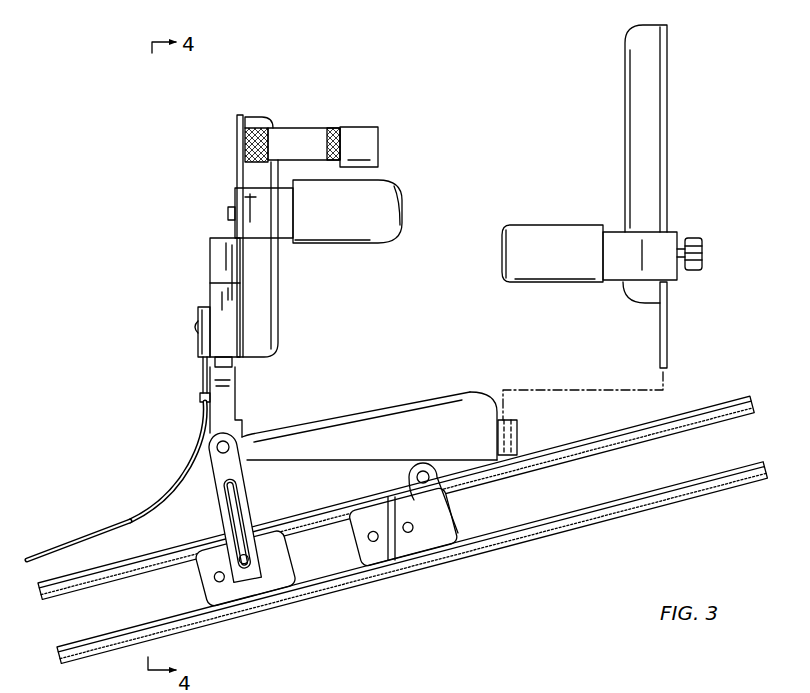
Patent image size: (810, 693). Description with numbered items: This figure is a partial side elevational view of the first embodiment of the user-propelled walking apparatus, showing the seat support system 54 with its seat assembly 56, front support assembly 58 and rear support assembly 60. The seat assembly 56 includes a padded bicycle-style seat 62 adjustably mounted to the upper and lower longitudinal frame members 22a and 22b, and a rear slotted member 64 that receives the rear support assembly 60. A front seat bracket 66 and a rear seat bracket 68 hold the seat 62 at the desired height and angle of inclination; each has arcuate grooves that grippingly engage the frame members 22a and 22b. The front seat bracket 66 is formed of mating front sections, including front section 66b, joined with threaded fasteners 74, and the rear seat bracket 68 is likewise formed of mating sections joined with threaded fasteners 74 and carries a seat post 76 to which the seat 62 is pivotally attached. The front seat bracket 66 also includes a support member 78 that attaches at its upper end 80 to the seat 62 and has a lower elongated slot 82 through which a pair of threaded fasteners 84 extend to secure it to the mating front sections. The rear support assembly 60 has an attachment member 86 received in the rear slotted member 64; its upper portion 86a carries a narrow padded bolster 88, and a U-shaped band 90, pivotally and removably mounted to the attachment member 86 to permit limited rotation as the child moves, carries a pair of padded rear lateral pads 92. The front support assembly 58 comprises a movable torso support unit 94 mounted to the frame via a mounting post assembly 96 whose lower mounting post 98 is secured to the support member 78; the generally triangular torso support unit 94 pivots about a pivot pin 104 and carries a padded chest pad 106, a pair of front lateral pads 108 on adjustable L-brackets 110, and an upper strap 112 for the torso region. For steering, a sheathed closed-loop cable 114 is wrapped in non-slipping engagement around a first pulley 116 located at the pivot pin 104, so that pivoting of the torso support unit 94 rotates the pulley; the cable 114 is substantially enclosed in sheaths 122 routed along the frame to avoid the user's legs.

The upper longitudinal frame member 22a is at (715, 405).
The lower longitudinal frame member 22b is at (715, 490).
The seat support system 54 is at (236, 157).
The seat assembly 56 is at (437, 394).
The front support assembly 58 is at (210, 245).
The rear support assembly 60 is at (654, 128).
The seat 62 is at (369, 403).
The rear slotted member 64 is at (518, 433).
The front seat bracket 66 is at (275, 580).
The mating front section 66b is at (218, 605).
The rear seat bracket 68 is at (445, 545).
The threaded fasteners 74 is at (218, 578).
The seat post 76 is at (408, 482).
The support member 78 is at (250, 546).
The upper end 80 is at (218, 455).
The elongated slot 82 is at (267, 518).
The threaded fasteners 84 is at (251, 611).
The attachment member 86 is at (670, 328).
The upper portion 86a is at (665, 150).
The padded bolster 88 is at (637, 93).
The U-shaped band 90 is at (672, 231).
The rear lateral pads 92 is at (538, 225).
The movable torso support unit 94 is at (210, 291).
The mounting post assembly 96 is at (238, 385).
The lower mounting post 98 is at (222, 416).
The pivot pin 104 is at (197, 330).
The chest pad 106 is at (258, 118).
The front lateral pads 108 is at (400, 185).
The adjustable L-brackets 110 is at (255, 197).
The upper strap 112 is at (330, 128).
The sheathed closed-loop cable 114 is at (205, 372).
The first pulley 116 is at (198, 318).
The sheaths 122 is at (78, 532).